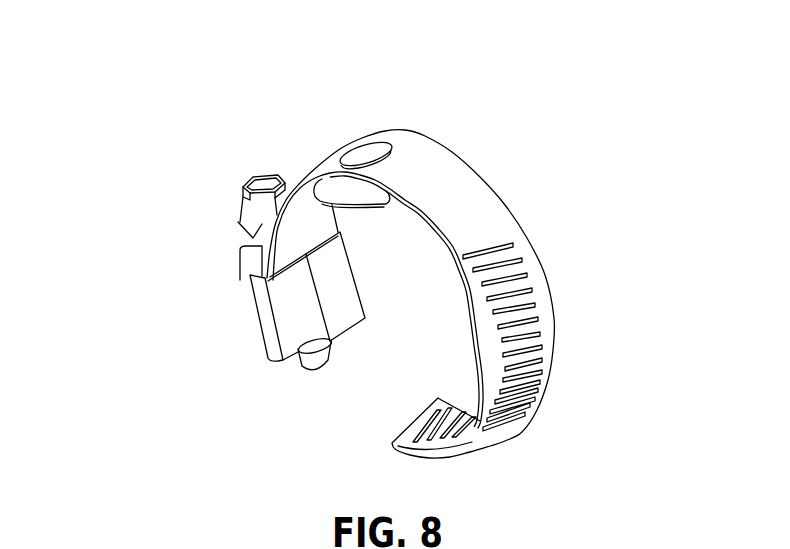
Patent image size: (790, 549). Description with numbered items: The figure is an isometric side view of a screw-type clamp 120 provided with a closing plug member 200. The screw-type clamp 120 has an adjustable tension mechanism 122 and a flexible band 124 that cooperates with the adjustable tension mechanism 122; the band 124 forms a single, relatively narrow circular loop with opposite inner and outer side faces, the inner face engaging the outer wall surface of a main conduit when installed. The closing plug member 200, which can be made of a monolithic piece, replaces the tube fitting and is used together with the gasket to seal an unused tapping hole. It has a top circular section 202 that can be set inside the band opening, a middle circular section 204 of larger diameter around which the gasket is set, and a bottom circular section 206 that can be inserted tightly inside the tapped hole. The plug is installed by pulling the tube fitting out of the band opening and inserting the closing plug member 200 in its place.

The closing plug member 200 is at (370, 125).
The screw-type clamp 120 is at (523, 193).
The flexible band 124 is at (552, 319).
The top circular section 202 is at (353, 152).
The bottom circular section 206 is at (378, 194).
The adjustable tension mechanism 122 is at (243, 282).
The middle circular section 204 is at (297, 224).